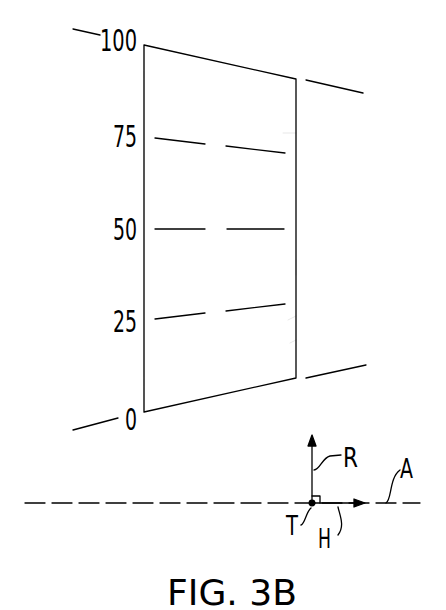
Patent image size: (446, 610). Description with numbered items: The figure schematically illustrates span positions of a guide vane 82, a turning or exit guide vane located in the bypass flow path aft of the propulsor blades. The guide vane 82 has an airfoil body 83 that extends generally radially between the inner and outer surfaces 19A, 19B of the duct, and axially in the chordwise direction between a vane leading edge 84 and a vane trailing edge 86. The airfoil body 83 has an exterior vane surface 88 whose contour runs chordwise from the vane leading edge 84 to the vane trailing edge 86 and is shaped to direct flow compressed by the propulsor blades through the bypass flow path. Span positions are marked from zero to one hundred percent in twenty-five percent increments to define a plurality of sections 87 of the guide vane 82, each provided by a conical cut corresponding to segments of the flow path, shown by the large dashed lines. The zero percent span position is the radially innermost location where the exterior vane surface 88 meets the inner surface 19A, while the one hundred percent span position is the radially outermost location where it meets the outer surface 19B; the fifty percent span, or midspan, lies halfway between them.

The guide vane 82 is at (88, 100).
The vane leading edge 84 is at (144, 270).
The inner surface of duct 19A is at (346, 366).
The outer surface of duct 19B is at (351, 94).
The sections of the guide vane 87 is at (273, 192).
The vane trailing edge 86 is at (296, 267).
The airfoil body 83 is at (288, 320).
The exterior vane surface 88 is at (290, 343).